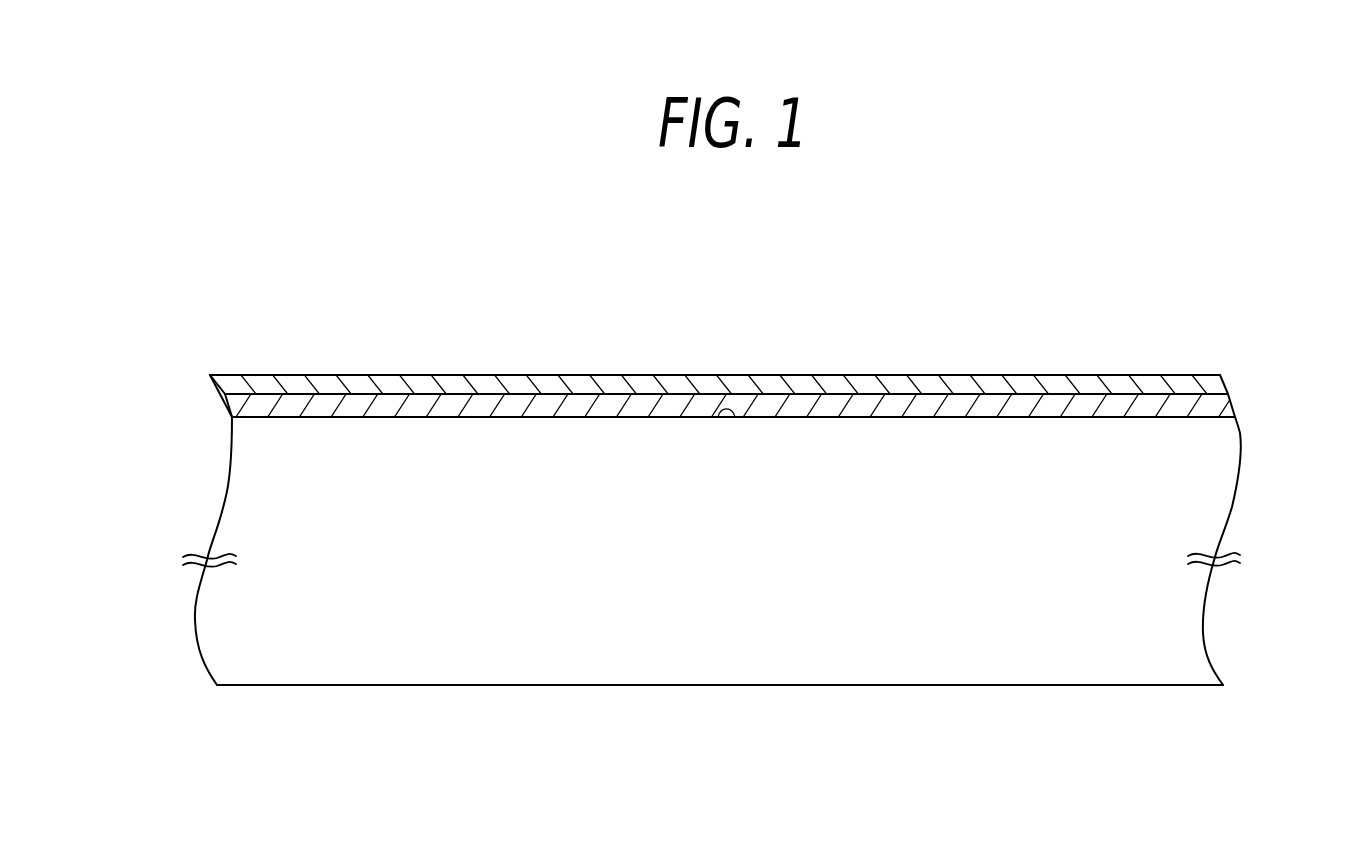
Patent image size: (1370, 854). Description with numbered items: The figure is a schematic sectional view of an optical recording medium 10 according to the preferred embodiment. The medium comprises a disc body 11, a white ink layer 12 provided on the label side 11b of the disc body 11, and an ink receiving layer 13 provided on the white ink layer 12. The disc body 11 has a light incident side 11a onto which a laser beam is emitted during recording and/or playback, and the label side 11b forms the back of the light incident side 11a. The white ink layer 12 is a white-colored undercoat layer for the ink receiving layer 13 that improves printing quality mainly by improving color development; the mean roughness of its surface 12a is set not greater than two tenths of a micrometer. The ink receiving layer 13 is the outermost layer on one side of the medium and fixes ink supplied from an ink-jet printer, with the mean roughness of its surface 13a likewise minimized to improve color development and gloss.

The optical recording medium 10 is at (1150, 300).
The disc body 11 is at (1208, 507).
The light incident side 11a is at (778, 690).
The label side 11b is at (735, 420).
The white ink layer 12 is at (1228, 408).
The surface of the white ink layer 12a is at (240, 384).
The ink receiving layer 13 is at (1212, 383).
The surface of the ink receiving layer 13a is at (606, 375).